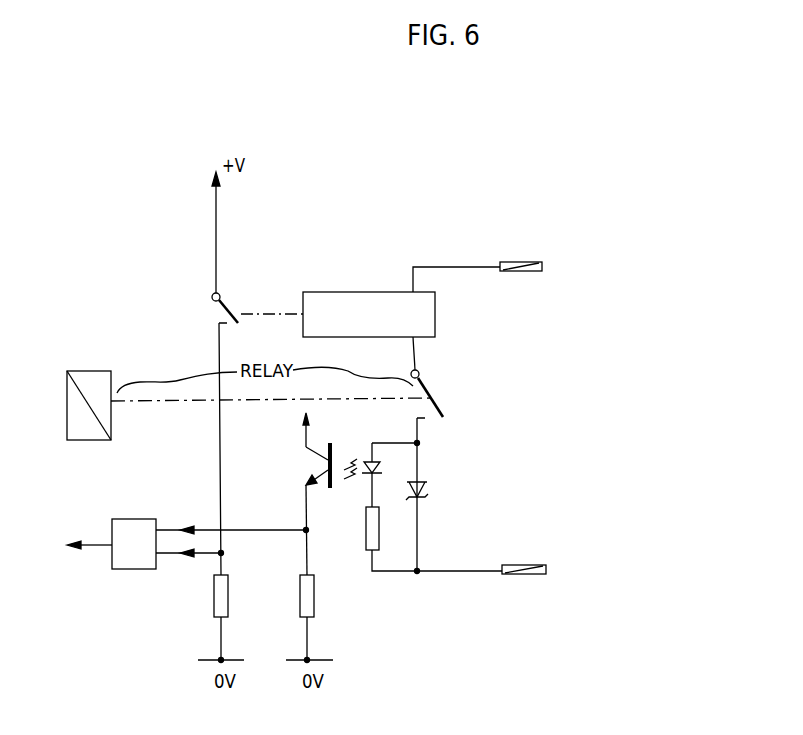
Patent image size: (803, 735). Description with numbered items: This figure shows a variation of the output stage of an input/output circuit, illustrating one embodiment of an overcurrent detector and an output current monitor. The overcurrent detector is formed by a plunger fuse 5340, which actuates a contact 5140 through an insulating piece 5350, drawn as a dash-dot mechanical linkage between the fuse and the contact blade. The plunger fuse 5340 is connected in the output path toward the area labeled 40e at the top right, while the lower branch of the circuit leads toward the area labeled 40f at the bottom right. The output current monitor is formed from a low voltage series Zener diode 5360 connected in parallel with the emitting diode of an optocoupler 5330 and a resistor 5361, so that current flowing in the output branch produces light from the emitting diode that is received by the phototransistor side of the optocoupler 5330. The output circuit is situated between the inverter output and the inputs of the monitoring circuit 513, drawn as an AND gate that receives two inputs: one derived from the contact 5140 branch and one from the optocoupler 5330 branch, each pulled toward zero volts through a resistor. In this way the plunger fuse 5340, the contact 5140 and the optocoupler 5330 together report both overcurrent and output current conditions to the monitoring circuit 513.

The contact 5140 is at (215, 310).
The insulating piece 5350 is at (264, 314).
The plunger fuse 5340 is at (436, 310).
The fuse 40e is at (538, 262).
The fuse 40f is at (545, 575).
The optocoupler 5330 is at (334, 450).
The low voltage series Zener diode 5360 is at (428, 484).
The resistor 5361 is at (367, 525).
The monitoring circuit 513 is at (134, 569).